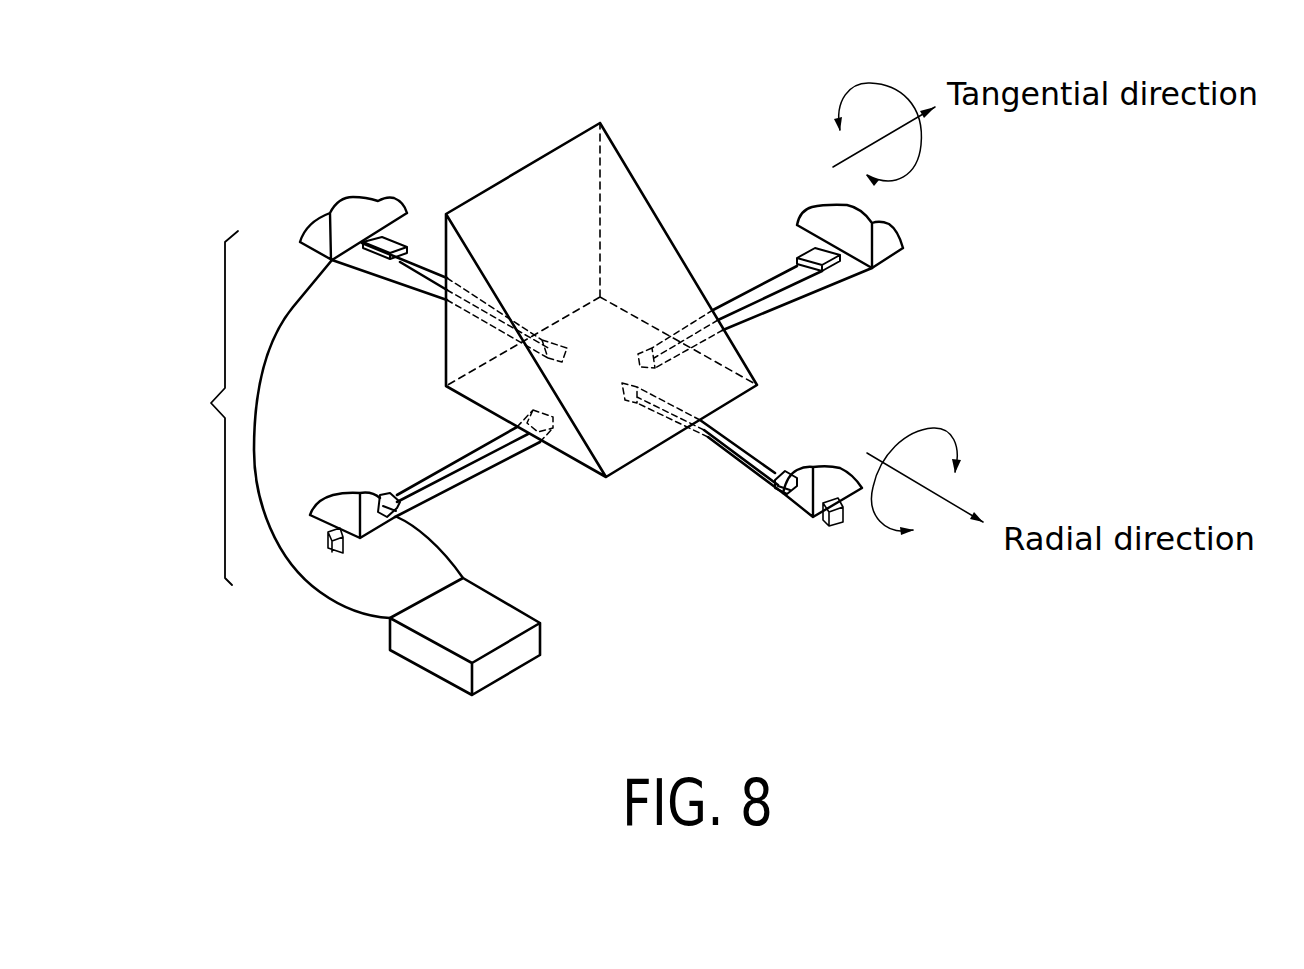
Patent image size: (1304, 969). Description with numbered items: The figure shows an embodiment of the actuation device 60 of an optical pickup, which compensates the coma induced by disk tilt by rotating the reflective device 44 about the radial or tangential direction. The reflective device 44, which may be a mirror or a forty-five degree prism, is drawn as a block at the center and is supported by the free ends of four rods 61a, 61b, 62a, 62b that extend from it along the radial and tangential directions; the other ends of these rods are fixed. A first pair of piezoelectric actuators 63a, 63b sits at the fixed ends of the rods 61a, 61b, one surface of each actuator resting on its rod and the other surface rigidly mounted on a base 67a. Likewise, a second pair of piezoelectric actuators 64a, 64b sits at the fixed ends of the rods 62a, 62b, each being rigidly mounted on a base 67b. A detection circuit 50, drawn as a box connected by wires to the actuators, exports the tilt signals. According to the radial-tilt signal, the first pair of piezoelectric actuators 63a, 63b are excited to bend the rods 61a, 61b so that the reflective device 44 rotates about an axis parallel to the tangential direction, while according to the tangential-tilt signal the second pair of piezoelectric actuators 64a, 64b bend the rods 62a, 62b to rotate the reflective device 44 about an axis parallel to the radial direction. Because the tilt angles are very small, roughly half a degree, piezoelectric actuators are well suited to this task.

The reflective device 44 is at (558, 160).
The detection circuit 50 is at (510, 629).
The actuation device 60 is at (203, 408).
The rod 61a is at (410, 267).
The rod 61b is at (752, 470).
The rod 62a is at (448, 483).
The rod 62b is at (763, 300).
The piezoelectric actuator 63a is at (397, 243).
The piezoelectric actuator 63b is at (788, 470).
The piezoelectric actuator 64a is at (379, 498).
The piezoelectric actuator 64b is at (813, 255).
The base 67a is at (347, 212).
The base 67b is at (342, 506).